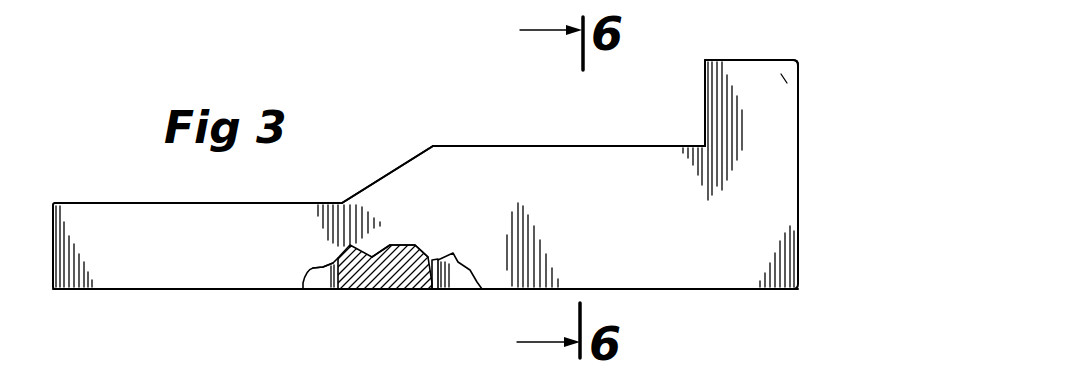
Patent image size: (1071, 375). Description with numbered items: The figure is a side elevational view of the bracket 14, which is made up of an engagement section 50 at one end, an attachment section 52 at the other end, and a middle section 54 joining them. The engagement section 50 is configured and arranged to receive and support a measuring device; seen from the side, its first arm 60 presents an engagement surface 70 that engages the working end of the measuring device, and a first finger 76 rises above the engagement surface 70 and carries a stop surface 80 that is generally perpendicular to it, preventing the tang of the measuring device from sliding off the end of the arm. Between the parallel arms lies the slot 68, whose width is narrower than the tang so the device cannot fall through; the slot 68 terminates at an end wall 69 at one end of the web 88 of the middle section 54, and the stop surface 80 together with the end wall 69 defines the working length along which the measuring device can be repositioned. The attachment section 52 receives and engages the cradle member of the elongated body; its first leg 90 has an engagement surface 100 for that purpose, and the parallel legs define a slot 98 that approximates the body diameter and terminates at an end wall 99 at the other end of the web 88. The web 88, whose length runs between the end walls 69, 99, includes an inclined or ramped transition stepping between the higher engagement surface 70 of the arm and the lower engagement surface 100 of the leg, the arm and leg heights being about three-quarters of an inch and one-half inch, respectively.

The bracket 14 is at (393, 140).
The engagement section 50 is at (718, 296).
The attachment section 52 is at (129, 296).
The middle section 54 is at (363, 300).
The first arm 60 is at (686, 270).
The slot 68 is at (466, 282).
The end wall 69 is at (437, 289).
The engagement surface 70 is at (570, 146).
The first finger 76 is at (802, 71).
The stop surface 80 is at (705, 73).
The web 88 is at (400, 294).
The first leg 90 is at (218, 276).
The slot 98 is at (313, 289).
The end wall 99 is at (324, 289).
The engagement surface 100 is at (186, 203).